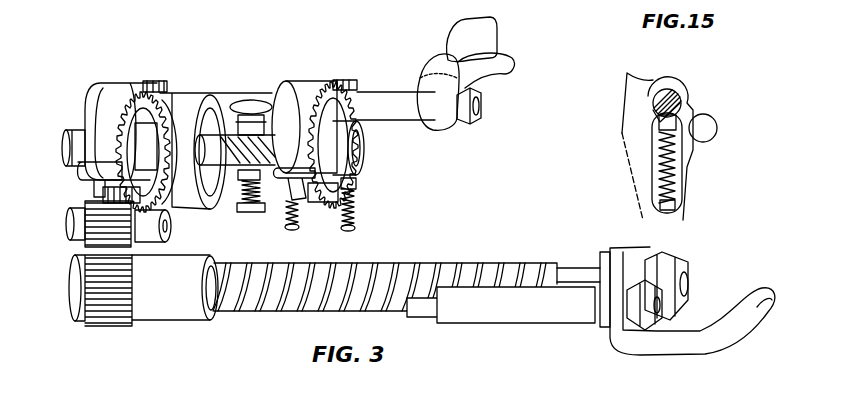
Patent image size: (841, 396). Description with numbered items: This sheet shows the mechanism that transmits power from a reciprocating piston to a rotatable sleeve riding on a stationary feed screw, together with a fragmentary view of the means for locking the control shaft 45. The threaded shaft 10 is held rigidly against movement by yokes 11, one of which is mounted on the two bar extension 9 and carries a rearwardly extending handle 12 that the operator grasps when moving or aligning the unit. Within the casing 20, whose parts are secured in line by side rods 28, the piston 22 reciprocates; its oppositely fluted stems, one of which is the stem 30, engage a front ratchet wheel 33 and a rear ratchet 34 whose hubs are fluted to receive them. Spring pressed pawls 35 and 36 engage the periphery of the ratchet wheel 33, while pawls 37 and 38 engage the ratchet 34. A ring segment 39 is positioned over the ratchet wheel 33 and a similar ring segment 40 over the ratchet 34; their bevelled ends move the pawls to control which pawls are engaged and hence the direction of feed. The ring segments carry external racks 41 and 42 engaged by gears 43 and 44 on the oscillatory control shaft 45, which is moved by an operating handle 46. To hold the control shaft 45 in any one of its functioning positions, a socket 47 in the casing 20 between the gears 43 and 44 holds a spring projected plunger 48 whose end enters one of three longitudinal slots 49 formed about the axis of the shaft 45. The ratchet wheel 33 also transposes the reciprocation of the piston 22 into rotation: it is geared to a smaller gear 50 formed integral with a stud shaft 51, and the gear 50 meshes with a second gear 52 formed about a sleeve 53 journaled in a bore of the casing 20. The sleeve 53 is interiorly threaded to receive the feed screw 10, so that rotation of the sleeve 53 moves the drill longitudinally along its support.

In FIG. 3, the two bar extension 9 is at (505, 310).
In FIG. 3, the threaded shaft 10 is at (378, 264).
In FIG. 3, the yoke 11 is at (630, 264).
In FIG. 3, the handle 12 is at (700, 343).
In FIG. 15, the casing 20 is at (640, 164).
In FIG. 3, the piston 22 is at (188, 100).
In FIG. 15, the side rods 28 is at (707, 128).
In FIG. 3, the stem 30 is at (225, 165).
In FIG. 3, the ratchet wheel 33 is at (137, 115).
In FIG. 3, the ratchet 34 is at (340, 120).
In FIG. 3, the pawl 35 is at (93, 173).
In FIG. 3, the pawl 36 is at (166, 200).
In FIG. 3, the pawl 37 is at (342, 214).
In FIG. 3, the pawl 38 is at (364, 177).
In FIG. 3, the ring segment 39 is at (100, 97).
In FIG. 3, the ring segment 40 is at (295, 98).
In FIG. 3, the rack 41 is at (147, 80).
In FIG. 3, the rack 42 is at (343, 66).
In FIG. 3, the gear 43 is at (152, 81).
In FIG. 3, the gear 44 is at (353, 87).
In FIG. 3, the control shaft 45 is at (412, 110).
In FIG. 15, the control shaft 45 is at (678, 92).
In FIG. 3, the operating handle 46 is at (477, 36).
In FIG. 15, the socket 47 is at (680, 186).
In FIG. 3, the spring projected plunger 48 is at (282, 195).
In FIG. 15, the spring projected plunger 48 is at (674, 128).
In FIG. 15, the longitudinal slots 49 is at (653, 110).
In FIG. 3, the gear 50 is at (78, 238).
In FIG. 3, the stud shaft 51 is at (70, 221).
In FIG. 3, the gear 52 is at (110, 322).
In FIG. 3, the sleeve 53 is at (177, 300).